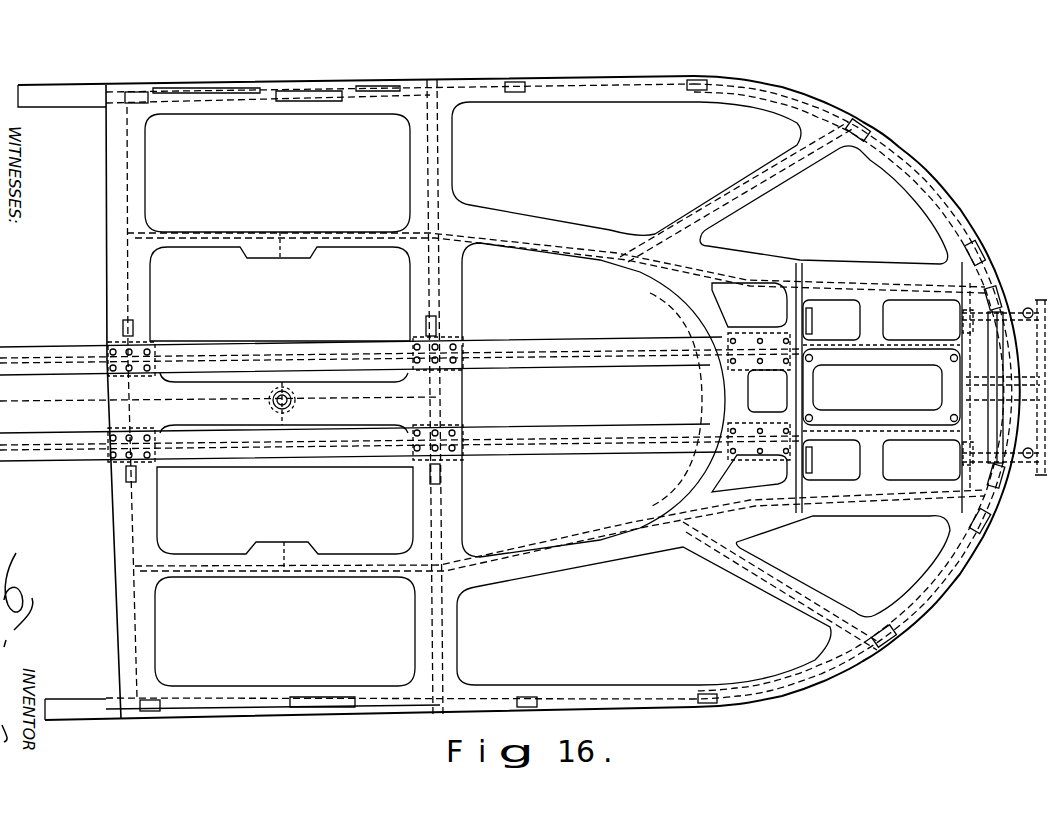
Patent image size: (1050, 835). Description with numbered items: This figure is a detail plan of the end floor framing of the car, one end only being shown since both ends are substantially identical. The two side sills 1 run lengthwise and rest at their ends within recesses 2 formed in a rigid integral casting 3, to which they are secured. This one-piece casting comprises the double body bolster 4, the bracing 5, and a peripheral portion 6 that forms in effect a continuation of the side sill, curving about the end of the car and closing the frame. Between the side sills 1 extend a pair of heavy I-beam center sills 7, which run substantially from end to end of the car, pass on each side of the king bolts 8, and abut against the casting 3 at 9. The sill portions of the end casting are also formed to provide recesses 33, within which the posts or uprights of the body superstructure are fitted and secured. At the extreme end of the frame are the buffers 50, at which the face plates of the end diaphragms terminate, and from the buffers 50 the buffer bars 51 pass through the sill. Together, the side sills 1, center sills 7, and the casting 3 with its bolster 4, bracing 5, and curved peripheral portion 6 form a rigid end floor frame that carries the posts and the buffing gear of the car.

The side sills 1 is at (80, 86).
The recesses 2 is at (432, 80).
The rigid integral casting 3 is at (714, 391).
The double body bolster 4 is at (148, 303).
The bracing 5 is at (716, 200).
The peripheral portion 6 is at (942, 590).
The center sills 7 is at (70, 348).
The king bolts 8 is at (275, 394).
The abutment 9 is at (803, 389).
The recesses 33 is at (515, 82).
The buffers 50 is at (1036, 307).
The buffer bars 51 is at (1036, 352).